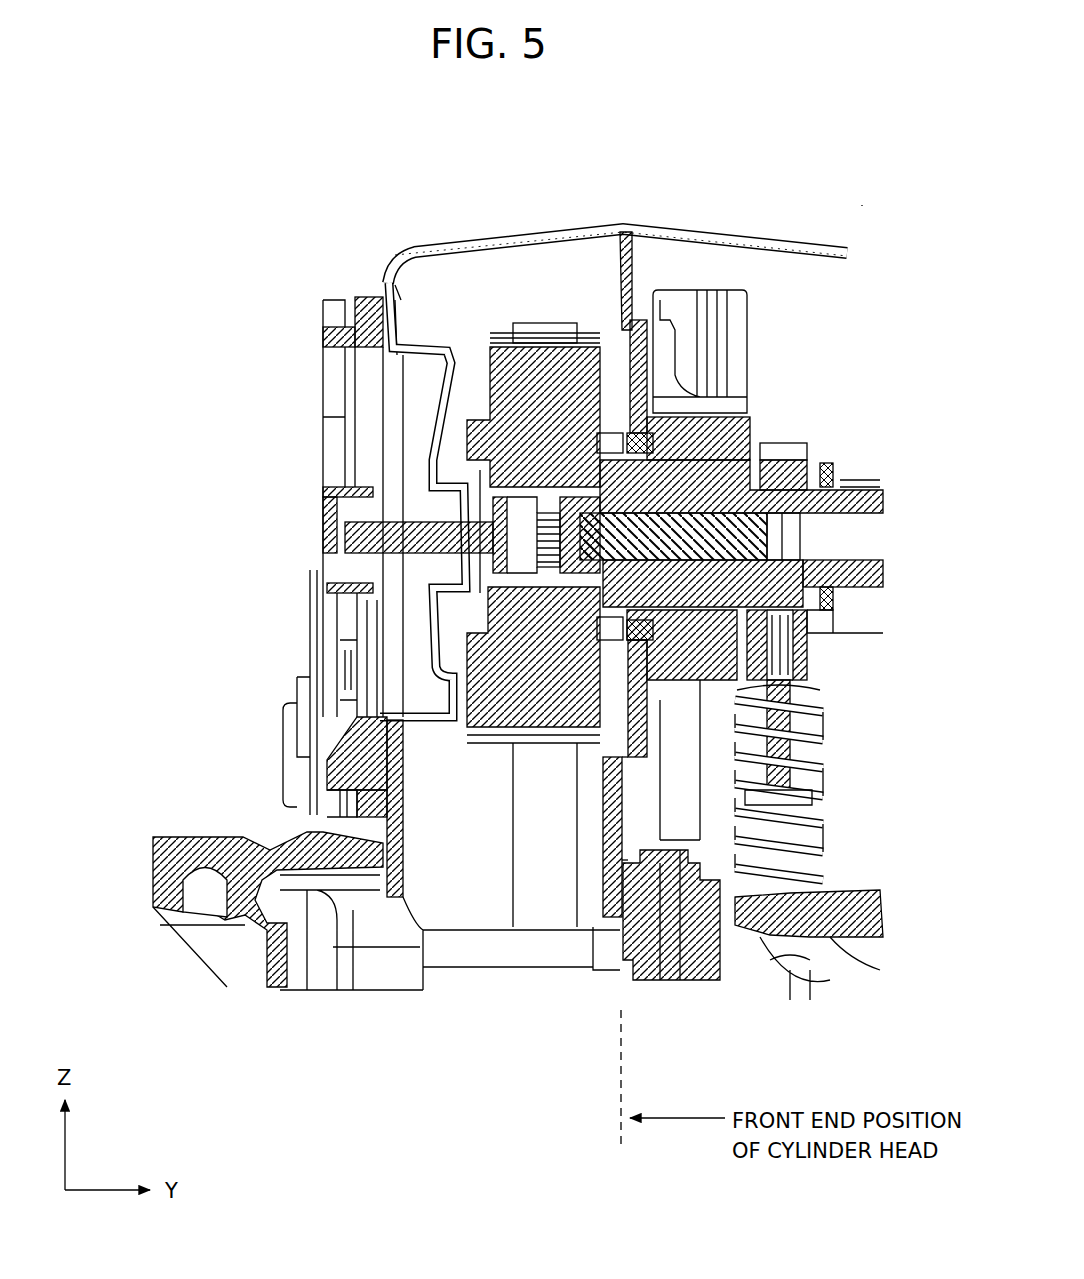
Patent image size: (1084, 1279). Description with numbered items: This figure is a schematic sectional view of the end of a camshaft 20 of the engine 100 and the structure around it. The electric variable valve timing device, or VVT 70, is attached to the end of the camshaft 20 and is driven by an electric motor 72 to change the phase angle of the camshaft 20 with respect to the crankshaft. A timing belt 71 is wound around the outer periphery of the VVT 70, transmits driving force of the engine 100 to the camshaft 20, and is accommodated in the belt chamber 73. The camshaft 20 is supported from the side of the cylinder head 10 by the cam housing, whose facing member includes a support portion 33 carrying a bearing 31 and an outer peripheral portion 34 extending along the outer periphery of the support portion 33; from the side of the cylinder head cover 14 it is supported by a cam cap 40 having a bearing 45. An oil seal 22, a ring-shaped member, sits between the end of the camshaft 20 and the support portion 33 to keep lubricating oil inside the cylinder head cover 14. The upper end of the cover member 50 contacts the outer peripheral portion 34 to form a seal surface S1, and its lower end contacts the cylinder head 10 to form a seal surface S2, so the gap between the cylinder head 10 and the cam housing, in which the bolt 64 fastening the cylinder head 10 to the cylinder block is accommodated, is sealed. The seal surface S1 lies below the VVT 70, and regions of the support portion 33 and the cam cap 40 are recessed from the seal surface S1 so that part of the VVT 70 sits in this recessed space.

The cylinder head 10 is at (818, 993).
The cylinder head cover 14 is at (753, 247).
The camshaft 20 is at (767, 420).
The oil seal 22 is at (645, 320).
The bearing 31 is at (665, 900).
The support portion 33 is at (590, 770).
The outer peripheral portion 34 is at (580, 790).
The cam cap 40 is at (663, 290).
The bearing 45 is at (708, 455).
The cover member 50 is at (612, 935).
The bolt 64 is at (700, 870).
The variable valve timing (VVT) 70 is at (475, 345).
The timing belt 71 is at (538, 320).
The electric motor 72 is at (323, 377).
The belt chamber 73 is at (395, 285).
The engine 100 is at (862, 205).
The seal surface S1 is at (623, 770).
The seal surface S2 is at (625, 858).